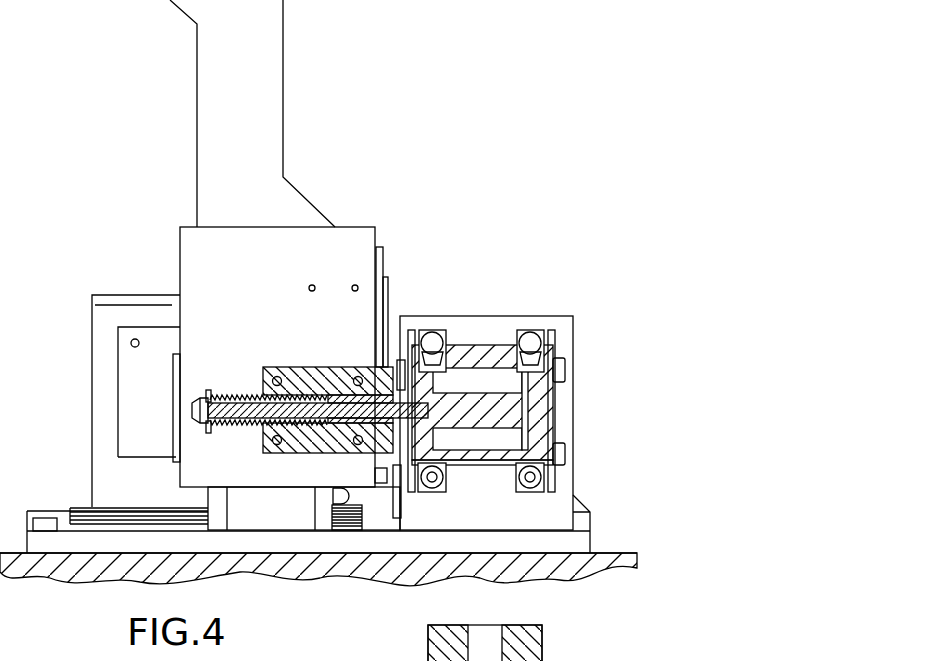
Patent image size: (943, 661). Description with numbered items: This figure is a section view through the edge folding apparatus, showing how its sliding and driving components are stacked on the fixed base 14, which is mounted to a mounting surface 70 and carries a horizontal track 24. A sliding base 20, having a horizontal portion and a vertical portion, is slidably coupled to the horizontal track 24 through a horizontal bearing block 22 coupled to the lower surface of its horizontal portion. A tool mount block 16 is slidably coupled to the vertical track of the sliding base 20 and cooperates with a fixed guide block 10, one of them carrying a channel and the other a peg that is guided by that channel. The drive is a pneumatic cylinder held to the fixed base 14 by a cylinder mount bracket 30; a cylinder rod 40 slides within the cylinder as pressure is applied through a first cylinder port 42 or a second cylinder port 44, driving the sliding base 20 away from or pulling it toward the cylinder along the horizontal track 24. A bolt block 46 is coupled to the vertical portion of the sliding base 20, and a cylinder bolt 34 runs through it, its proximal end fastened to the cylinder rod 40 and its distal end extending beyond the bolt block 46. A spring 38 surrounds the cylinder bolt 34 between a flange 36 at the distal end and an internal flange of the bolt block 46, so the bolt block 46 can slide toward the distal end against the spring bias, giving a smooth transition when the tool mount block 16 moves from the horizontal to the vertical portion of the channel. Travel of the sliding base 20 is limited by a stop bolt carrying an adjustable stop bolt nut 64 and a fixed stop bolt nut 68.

The fixed guide block 10 is at (124, 372).
The fixed base 14 is at (141, 297).
The tool mount block 16 is at (278, 55).
The sliding base 20 is at (275, 233).
The horizontal bearing block 22 is at (207, 500).
The horizontal track 24 is at (93, 507).
The cylinder mount bracket 30 is at (565, 340).
The cylinder bolt 34 is at (193, 422).
The flange 36 is at (210, 431).
The spring 38 is at (231, 392).
The cylinder rod 40 is at (458, 425).
The first cylinder port 42 is at (430, 348).
The second cylinder port 44 is at (530, 348).
The bolt block 46 is at (290, 372).
The adjustable stop bolt nut 64 is at (392, 480).
The fixed stop bolt nut 68 is at (375, 482).
The mounting surface 70 is at (605, 558).